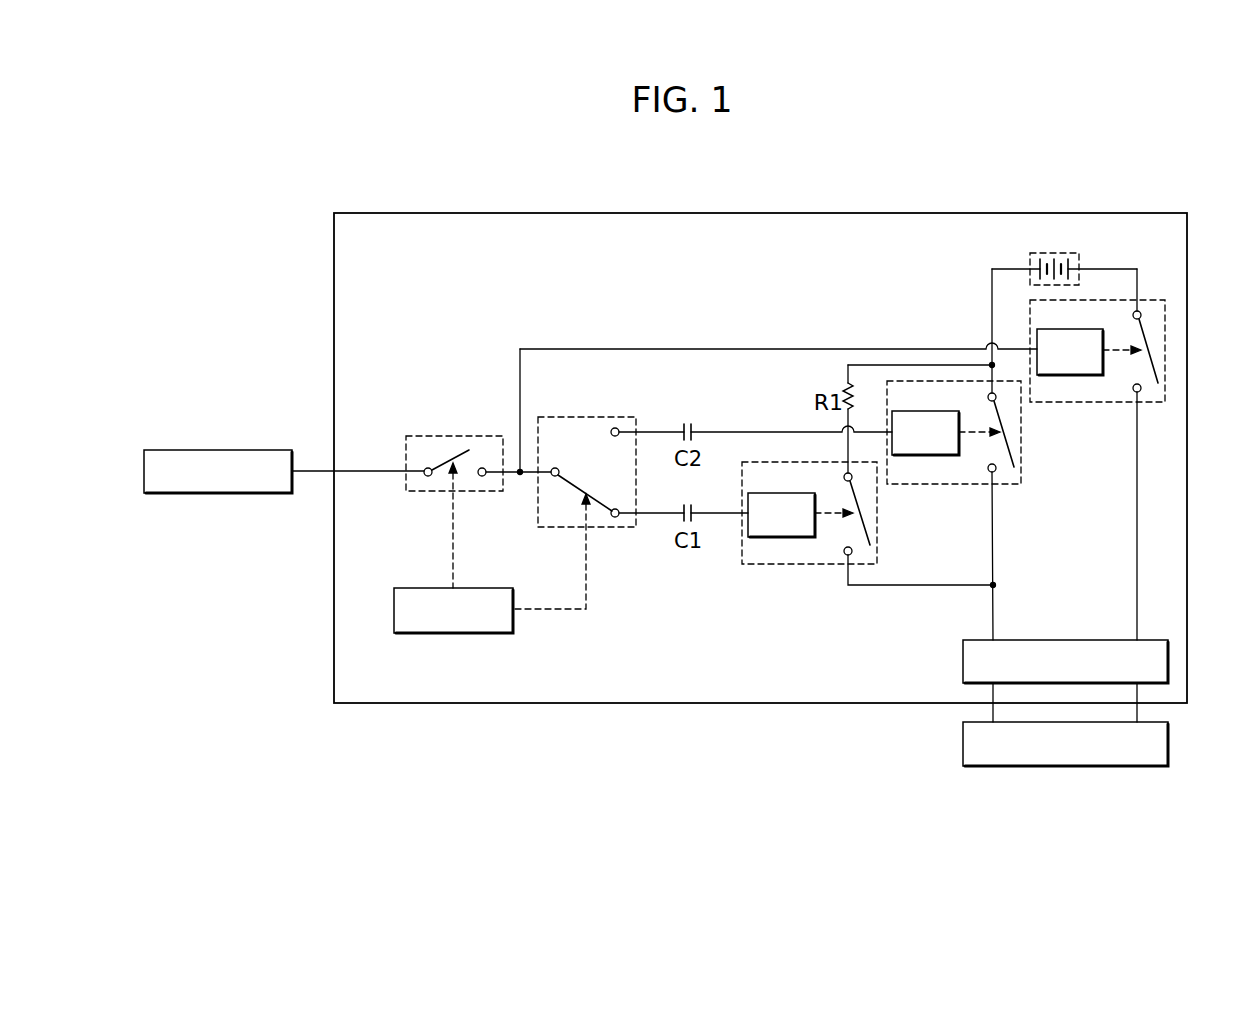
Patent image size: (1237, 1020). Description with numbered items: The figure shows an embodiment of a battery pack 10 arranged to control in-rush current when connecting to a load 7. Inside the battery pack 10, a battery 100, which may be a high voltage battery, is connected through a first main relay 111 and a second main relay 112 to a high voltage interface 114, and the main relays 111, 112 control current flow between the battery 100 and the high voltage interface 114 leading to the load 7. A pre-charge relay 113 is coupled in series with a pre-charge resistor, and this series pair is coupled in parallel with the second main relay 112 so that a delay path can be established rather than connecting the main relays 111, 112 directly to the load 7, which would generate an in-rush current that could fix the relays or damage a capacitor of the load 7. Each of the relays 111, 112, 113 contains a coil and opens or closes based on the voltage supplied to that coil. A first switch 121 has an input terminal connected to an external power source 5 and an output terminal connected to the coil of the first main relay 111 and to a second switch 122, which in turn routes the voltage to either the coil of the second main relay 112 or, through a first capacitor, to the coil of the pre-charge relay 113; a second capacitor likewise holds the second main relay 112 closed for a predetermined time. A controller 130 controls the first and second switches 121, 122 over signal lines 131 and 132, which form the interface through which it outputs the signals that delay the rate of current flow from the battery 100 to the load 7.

The external power source 5 is at (218, 450).
The load 7 is at (1168, 743).
The battery pack 10 is at (760, 213).
The battery 100 is at (1081, 256).
The first main relay 111 is at (1100, 403).
The second main relay 112 is at (955, 485).
The pre-charge relay 113 is at (808, 565).
The high voltage interface 114 is at (1168, 661).
The first switch 121 is at (453, 436).
The second switch 122 is at (617, 528).
The controller 130 is at (457, 634).
The signal line 131 is at (450, 541).
The signal line 132 is at (551, 612).